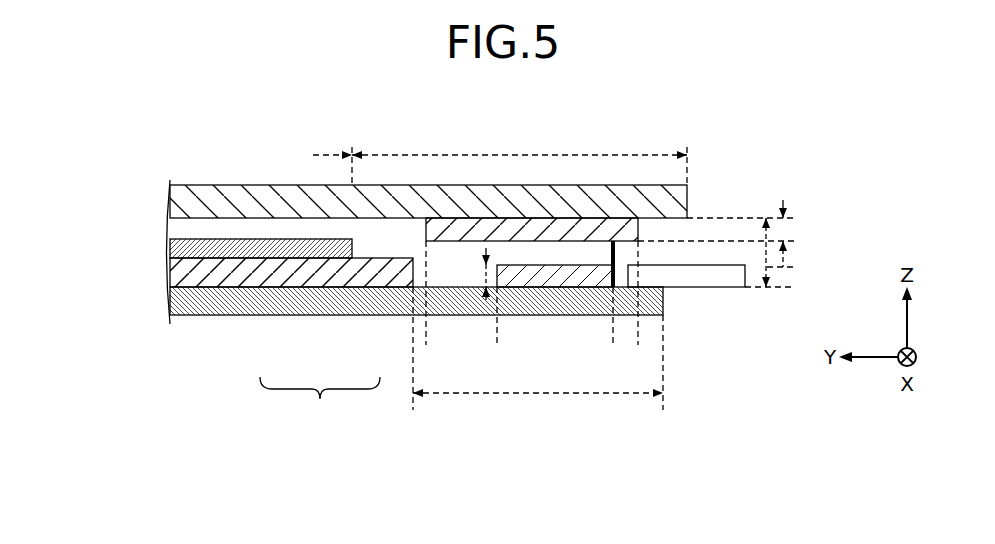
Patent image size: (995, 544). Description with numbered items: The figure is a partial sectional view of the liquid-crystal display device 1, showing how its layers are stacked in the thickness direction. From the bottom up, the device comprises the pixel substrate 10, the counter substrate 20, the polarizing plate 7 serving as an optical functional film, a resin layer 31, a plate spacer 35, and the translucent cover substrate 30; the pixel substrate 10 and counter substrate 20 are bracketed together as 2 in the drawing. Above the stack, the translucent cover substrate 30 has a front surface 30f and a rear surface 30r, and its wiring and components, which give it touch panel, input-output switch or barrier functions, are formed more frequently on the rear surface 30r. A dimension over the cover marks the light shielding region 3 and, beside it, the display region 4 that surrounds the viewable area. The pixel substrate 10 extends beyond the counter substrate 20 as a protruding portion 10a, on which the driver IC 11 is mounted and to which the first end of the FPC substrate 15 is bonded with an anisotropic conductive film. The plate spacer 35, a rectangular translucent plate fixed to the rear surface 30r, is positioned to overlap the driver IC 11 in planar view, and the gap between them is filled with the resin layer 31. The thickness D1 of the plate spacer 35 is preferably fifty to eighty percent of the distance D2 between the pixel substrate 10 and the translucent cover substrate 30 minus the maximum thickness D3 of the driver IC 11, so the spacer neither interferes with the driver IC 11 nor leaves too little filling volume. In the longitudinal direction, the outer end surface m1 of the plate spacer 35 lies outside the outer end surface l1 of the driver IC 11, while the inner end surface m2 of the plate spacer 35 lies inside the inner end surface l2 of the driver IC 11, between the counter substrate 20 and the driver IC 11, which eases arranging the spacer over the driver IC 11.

The liquid-crystal display device 1 is at (122, 165).
The display panel 2 is at (320, 403).
The light shielding region 3 is at (511, 154).
The display region 4 is at (322, 154).
The polarizing plate 7 is at (216, 248).
The pixel substrate 10 is at (363, 298).
The protruding portion 10a is at (542, 397).
The driver IC 11 is at (535, 278).
The FPC substrate 15 is at (720, 278).
The counter substrate 20 is at (283, 275).
The translucent cover substrate 30 is at (258, 200).
The front surface 30f is at (682, 186).
The rear surface 30r is at (680, 220).
The resin layer 31 is at (197, 228).
The plate spacer 35 is at (577, 233).
The thickness of the plate spacer D1 is at (792, 228).
The distance between the pixel substrate and the translucent cover substrate D2 is at (792, 270).
The maximum thickness of the driver IC D3 is at (486, 276).
The inner end surface of the plate spacer m2 is at (435, 356).
The inner end surface of the driver IC l2 is at (461, 304).
The outer end surface of the driver IC l1 is at (607, 327).
The outer end surface of the plate spacer m1 is at (640, 304).